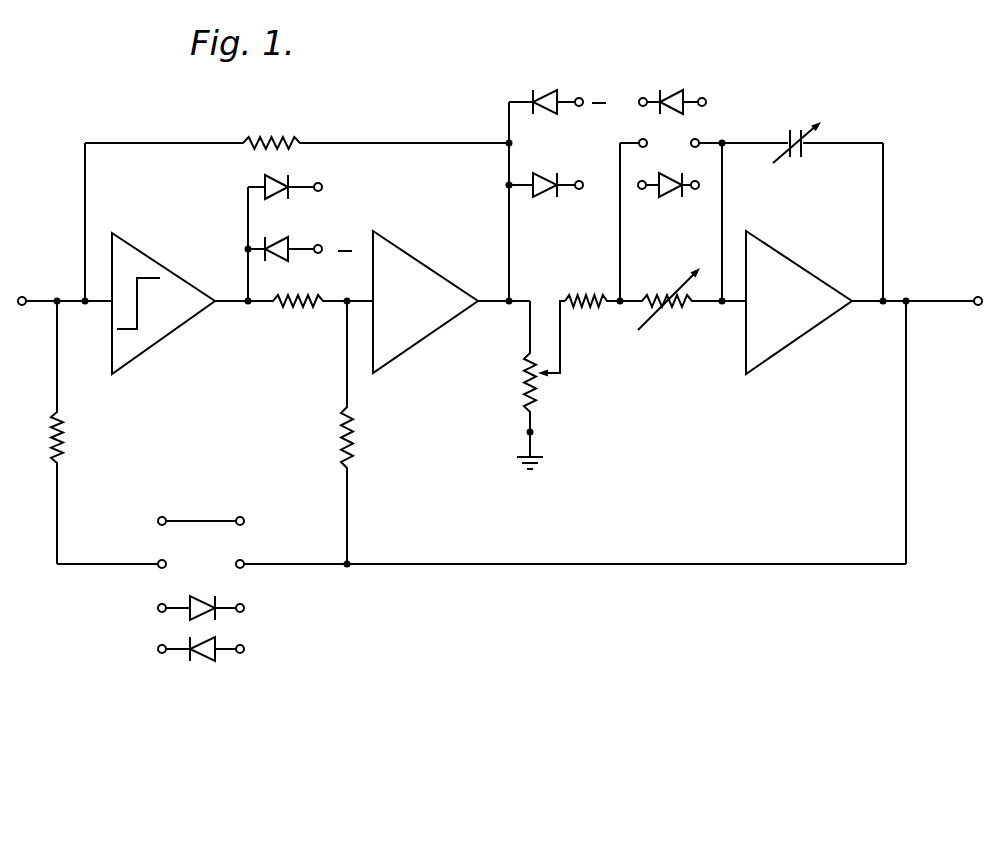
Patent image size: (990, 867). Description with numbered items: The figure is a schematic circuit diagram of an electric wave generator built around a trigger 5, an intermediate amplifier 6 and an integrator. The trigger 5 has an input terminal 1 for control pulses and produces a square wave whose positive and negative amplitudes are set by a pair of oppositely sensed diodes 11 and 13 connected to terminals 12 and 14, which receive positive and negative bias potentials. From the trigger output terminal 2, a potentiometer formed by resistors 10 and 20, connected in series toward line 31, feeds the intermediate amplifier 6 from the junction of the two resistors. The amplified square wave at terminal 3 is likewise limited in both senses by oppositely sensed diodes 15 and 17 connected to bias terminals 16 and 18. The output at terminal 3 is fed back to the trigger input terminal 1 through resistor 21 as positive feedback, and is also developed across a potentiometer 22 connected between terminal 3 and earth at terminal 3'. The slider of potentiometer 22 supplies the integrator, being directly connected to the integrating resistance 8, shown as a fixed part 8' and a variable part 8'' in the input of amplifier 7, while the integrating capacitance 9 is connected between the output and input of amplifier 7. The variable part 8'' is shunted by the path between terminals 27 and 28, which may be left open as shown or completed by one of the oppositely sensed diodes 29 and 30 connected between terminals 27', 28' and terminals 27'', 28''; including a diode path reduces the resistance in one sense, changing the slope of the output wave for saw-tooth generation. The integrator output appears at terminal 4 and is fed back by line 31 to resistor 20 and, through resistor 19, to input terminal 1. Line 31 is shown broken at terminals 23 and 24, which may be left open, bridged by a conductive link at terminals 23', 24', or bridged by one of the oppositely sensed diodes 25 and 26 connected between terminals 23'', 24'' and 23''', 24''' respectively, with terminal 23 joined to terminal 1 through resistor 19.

The input terminal 1 is at (23, 297).
The terminal 2 is at (247, 307).
The terminal 3 is at (504, 323).
The earth terminal 3' is at (545, 443).
The terminal 4 is at (977, 297).
The trigger 5 is at (168, 270).
The intermediate amplifier 6 is at (427, 270).
The amplifier 7 is at (807, 278).
The integrating resistance 8 is at (664, 282).
The fixed part 8' is at (594, 321).
The variable part 8'' is at (673, 306).
The integrating capacitance 9 is at (790, 132).
The resistor 10 is at (288, 306).
The diode 11 is at (263, 189).
The terminal 12 is at (321, 183).
The diode 13 is at (285, 244).
The terminal 14 is at (322, 246).
The diode 15 is at (546, 198).
The terminal 16 is at (582, 196).
The diode 17 is at (549, 90).
The terminal 18 is at (582, 93).
The resistor 19 is at (50, 430).
The resistor 20 is at (353, 432).
The resistor 21 is at (282, 137).
The potentiometer 22 is at (525, 358).
The terminal 23 is at (111, 550).
The terminal 24 is at (291, 551).
The terminal 23' is at (186, 505).
The terminal 24' is at (262, 505).
The terminal 23'' is at (133, 606).
The terminal 24'' is at (266, 606).
The terminal 23''' is at (133, 647).
The terminal 24''' is at (270, 647).
The diode 25 is at (202, 596).
The diode 26 is at (206, 662).
The terminal 27 is at (627, 207).
The terminal 28 is at (710, 207).
The terminal 27' is at (636, 72).
The terminal 28' is at (718, 75).
The terminal 27'' is at (647, 210).
The terminal 28'' is at (695, 210).
The diode 29 is at (675, 86).
The diode 30 is at (674, 173).
The line 31 is at (723, 568).